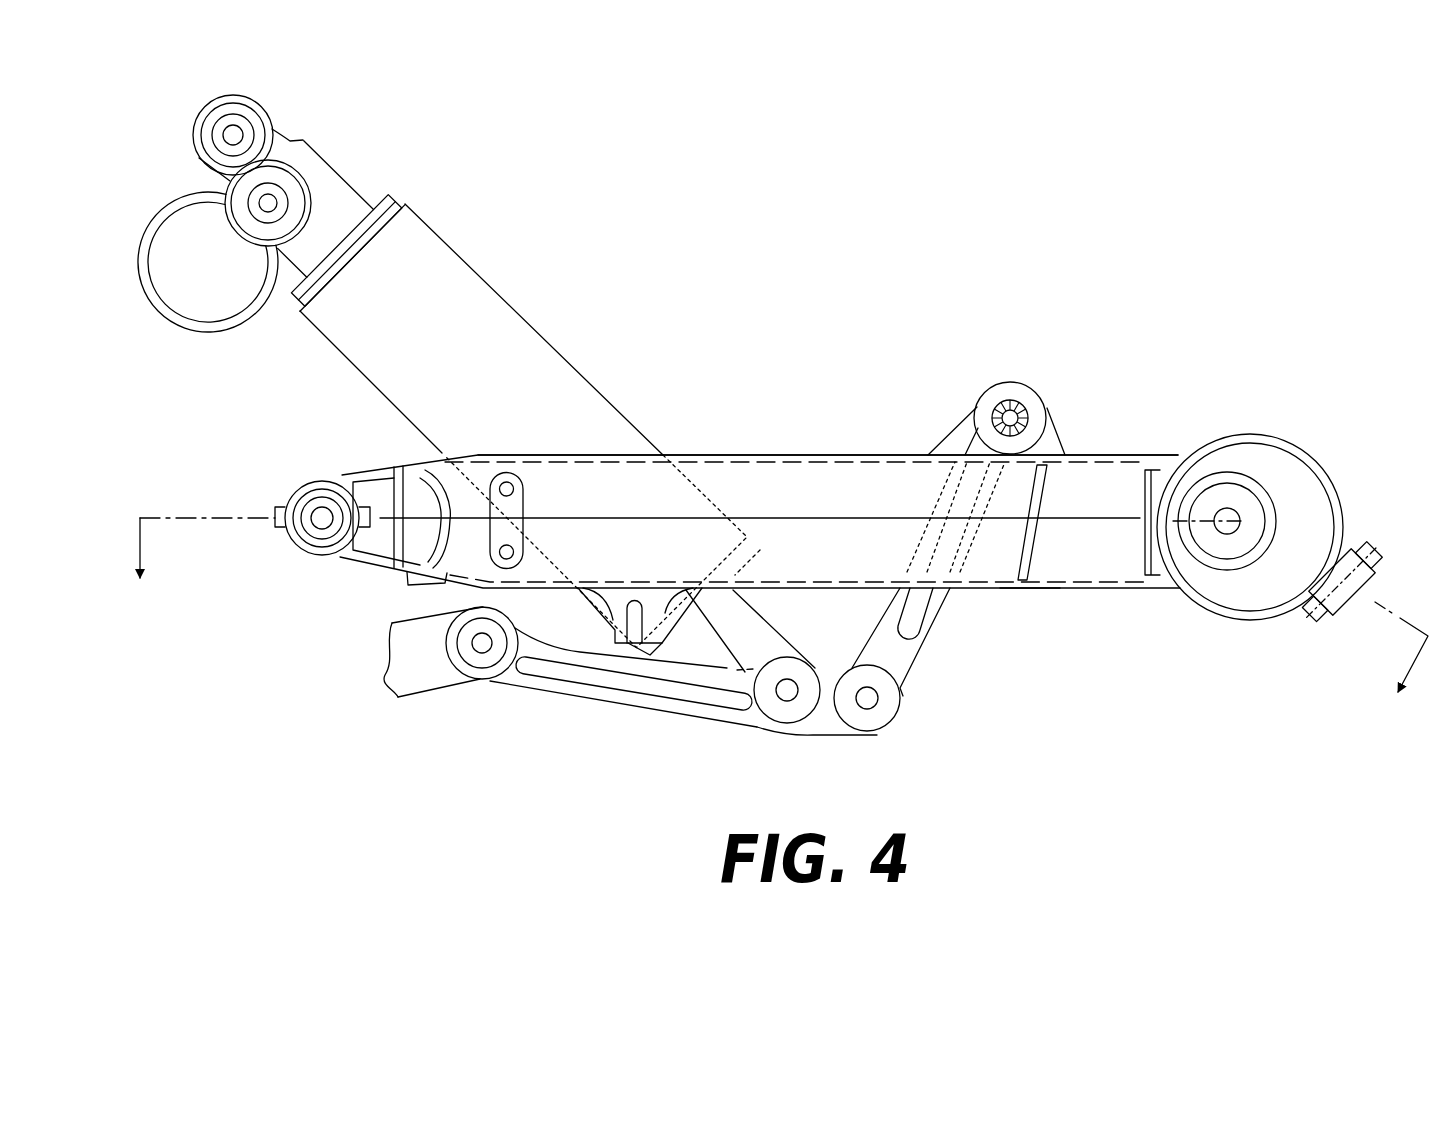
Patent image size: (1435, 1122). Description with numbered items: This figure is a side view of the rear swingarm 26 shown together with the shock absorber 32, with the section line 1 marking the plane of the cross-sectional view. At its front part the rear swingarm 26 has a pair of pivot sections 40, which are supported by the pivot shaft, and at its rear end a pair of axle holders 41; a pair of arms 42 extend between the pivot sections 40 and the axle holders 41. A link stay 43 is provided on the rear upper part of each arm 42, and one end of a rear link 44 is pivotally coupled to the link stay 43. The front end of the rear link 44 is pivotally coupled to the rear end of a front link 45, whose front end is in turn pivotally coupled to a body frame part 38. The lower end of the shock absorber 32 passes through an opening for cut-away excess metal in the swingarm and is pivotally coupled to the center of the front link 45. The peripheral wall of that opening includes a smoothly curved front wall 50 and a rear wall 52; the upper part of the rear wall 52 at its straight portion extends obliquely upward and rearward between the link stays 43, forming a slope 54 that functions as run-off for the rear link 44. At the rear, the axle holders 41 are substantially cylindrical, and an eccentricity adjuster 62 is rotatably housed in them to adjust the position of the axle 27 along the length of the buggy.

The section line 1- 1 is at (779, 624).
The rear swingarm 26 is at (730, 440).
The axle 27 is at (1233, 528).
The shock absorber 32 is at (480, 272).
The body frame part 38 is at (425, 678).
The pivot sections 40 is at (305, 553).
The axle holders 41 is at (1264, 514).
The arms 42 is at (843, 453).
The link stay 43 is at (955, 438).
The rear link 44 is at (903, 658).
The front link 45 is at (683, 707).
The front wall 50 is at (447, 493).
The rear wall 52 is at (1022, 585).
The slope 54 is at (1050, 477).
The eccentricity adjuster 62 is at (1217, 592).